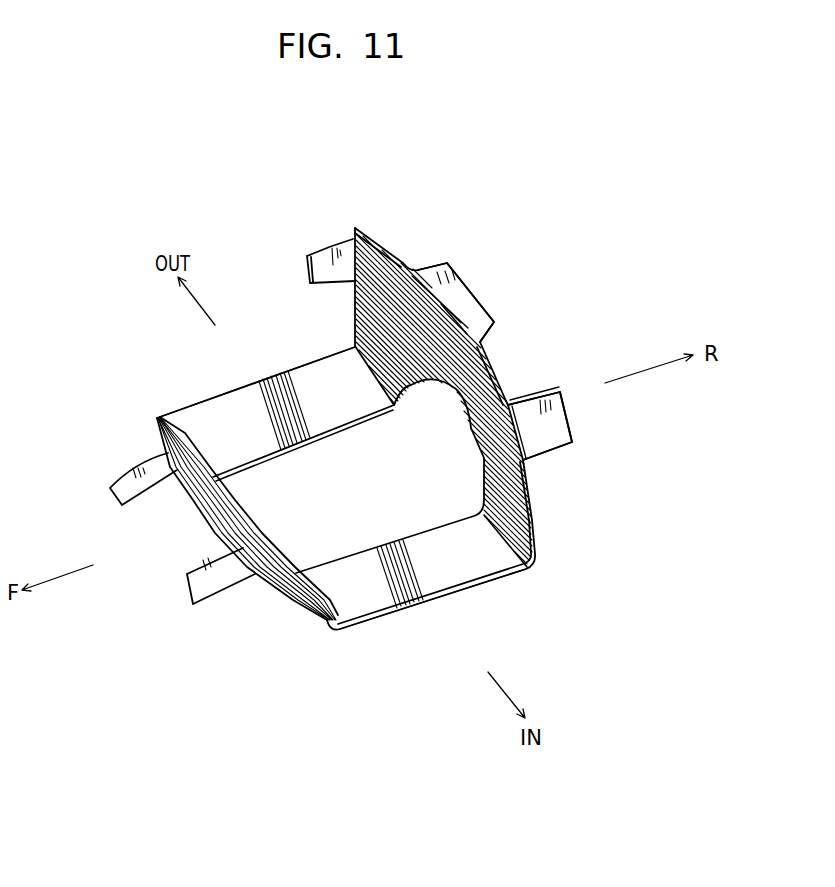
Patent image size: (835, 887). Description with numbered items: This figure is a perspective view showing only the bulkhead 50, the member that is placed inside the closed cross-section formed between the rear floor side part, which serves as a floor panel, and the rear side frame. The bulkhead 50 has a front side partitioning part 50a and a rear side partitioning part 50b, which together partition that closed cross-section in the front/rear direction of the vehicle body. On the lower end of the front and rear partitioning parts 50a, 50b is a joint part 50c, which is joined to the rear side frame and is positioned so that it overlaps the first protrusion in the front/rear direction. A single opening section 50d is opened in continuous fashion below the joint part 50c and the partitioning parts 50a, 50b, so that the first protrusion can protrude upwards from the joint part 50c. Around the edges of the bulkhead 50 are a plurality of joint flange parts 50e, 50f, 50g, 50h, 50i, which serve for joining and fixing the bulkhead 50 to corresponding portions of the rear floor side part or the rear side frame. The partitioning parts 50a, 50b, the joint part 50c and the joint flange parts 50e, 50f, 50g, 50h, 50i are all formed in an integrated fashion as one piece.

The bulkhead 50 is at (486, 238).
The front side partitioning part 50a is at (225, 507).
The rear side partitioning part 50b is at (358, 321).
The joint part 50c is at (225, 407).
The opening section 50d is at (318, 443).
The joint flange part 50e is at (318, 248).
The joint flange part 50f is at (473, 288).
The joint flange part 50g is at (573, 427).
The joint flange part 50h is at (118, 478).
The tab 50i is at (213, 601).